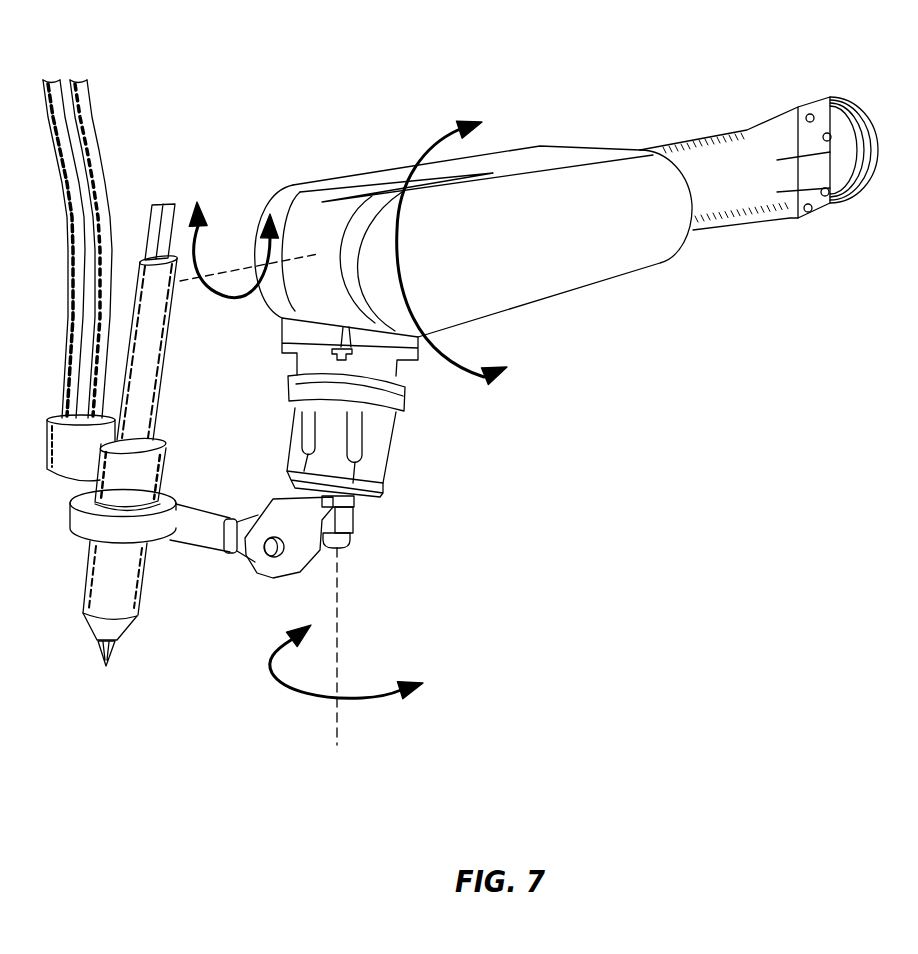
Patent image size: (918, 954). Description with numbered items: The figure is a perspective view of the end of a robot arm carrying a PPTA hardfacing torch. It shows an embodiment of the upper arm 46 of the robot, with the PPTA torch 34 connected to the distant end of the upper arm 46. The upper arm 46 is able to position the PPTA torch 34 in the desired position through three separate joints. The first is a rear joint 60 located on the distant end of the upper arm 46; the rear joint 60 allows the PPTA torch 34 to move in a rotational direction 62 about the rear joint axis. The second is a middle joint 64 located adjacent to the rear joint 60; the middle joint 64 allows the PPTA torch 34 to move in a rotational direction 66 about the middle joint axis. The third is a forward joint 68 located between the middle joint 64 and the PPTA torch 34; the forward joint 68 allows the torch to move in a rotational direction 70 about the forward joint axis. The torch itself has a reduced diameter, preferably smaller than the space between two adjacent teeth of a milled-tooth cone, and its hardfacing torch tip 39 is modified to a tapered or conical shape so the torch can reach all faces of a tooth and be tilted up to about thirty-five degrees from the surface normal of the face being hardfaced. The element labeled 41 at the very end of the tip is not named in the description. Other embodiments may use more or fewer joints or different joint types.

The upper arm 46 is at (493, 85).
The rear joint 60 is at (312, 228).
The rotational direction 62 is at (421, 151).
The rotational direction 70 is at (236, 299).
The PPTA torch 34 is at (108, 588).
The hardfacing torch tip 39 is at (103, 629).
The welding wire 41 is at (116, 646).
The forward joint 68 is at (268, 538).
The middle joint 64 is at (349, 541).
The rotational direction 66 is at (363, 700).